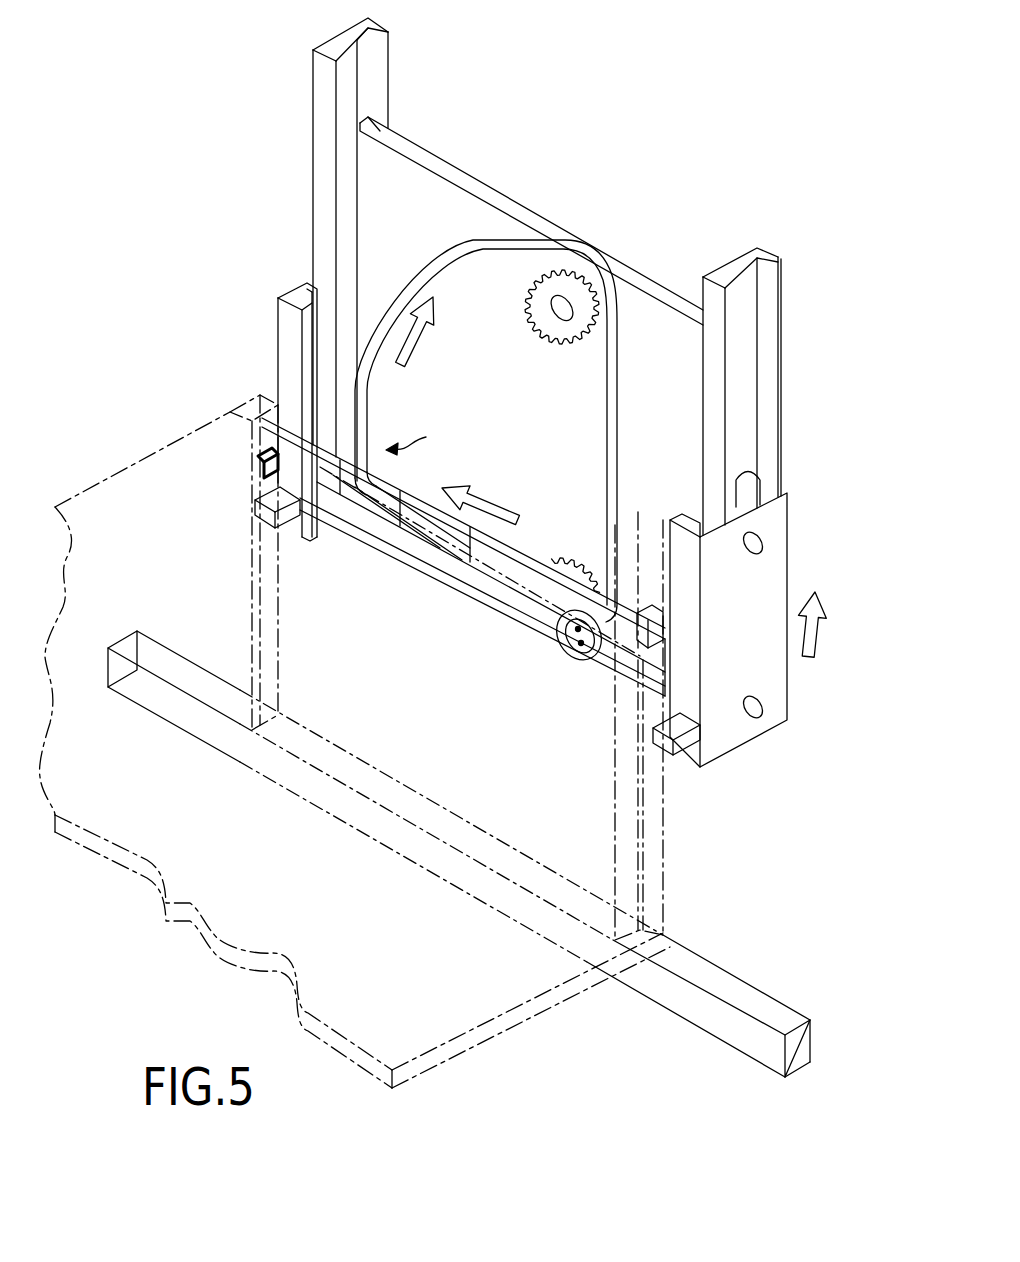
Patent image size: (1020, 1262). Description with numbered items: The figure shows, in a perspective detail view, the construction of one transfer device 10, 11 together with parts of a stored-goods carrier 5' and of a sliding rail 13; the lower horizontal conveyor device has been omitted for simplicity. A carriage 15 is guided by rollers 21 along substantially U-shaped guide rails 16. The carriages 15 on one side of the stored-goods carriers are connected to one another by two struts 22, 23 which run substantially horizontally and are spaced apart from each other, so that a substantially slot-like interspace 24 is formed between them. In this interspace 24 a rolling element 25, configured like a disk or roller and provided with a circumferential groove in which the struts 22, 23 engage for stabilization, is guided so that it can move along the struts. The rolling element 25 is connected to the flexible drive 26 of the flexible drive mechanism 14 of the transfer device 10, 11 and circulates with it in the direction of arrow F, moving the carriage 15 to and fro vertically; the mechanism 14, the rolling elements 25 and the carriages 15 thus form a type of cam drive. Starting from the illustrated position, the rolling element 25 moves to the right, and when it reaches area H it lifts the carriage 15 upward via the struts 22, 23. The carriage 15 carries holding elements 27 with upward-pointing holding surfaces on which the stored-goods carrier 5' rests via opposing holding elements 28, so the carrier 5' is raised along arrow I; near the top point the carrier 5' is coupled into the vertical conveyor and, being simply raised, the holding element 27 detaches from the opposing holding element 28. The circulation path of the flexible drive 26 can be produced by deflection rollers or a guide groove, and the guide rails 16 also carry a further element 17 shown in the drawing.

The transfer device 10 is at (472, 430).
The transfer device 11 is at (192, 51).
The sliding rail 13 is at (762, 998).
The flexible drive mechanism 14 is at (574, 243).
The carriage 15 is at (775, 558).
The guide rail 16 is at (372, 78).
The rail 17 is at (500, 215).
The roller 21 is at (745, 485).
The strut 22 is at (360, 545).
The strut 23 is at (470, 585).
The slot-like interspace 24 is at (505, 600).
The rolling element 25 is at (572, 660).
The flexible drive 26 is at (608, 360).
The holding element 27 is at (300, 525).
The opposing holding element 28 is at (262, 470).
The stored-goods carrier 5' is at (355, 739).